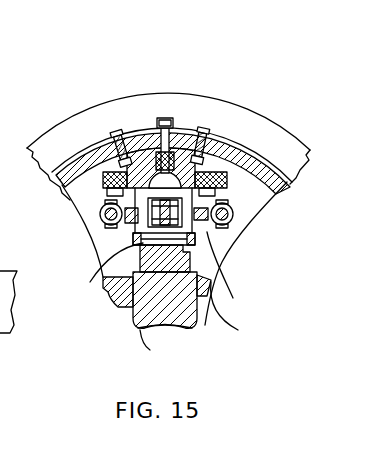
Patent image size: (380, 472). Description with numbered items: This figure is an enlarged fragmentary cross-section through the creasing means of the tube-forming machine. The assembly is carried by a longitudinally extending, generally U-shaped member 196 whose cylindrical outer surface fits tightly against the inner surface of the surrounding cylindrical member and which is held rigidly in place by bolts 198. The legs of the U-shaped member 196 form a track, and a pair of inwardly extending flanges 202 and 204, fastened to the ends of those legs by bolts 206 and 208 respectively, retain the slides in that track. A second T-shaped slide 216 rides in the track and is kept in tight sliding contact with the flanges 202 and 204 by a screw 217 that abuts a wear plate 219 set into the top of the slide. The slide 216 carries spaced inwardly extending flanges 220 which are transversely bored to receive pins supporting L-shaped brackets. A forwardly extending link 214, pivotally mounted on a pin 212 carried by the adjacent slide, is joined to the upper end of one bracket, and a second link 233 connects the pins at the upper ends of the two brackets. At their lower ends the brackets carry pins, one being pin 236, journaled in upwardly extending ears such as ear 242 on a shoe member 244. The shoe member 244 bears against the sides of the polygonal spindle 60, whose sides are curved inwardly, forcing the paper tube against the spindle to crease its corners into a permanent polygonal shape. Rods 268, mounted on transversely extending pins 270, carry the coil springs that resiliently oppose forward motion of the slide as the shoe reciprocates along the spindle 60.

The spindle 60 is at (165, 346).
The U-shaped member 196 is at (243, 145).
The bolts 198 is at (126, 140).
The inwardly extending flange 202 is at (100, 192).
The inwardly extending flange 204 is at (228, 185).
The bolt 206 is at (100, 208).
The bolt 208 is at (223, 190).
The pin 212 is at (222, 243).
The forwardly extending link 214 is at (133, 300).
The second T-shaped slide 216 is at (203, 128).
The screw 217 is at (170, 122).
The wear plate 219 is at (118, 138).
The inwardly extending flanges 220 is at (138, 227).
The second link 233 is at (140, 248).
The pin 236 is at (224, 283).
The ear 242 is at (100, 277).
The shoe member 244 is at (242, 310).
The rods 268 is at (130, 217).
The transversely extending pins 270 is at (107, 128).